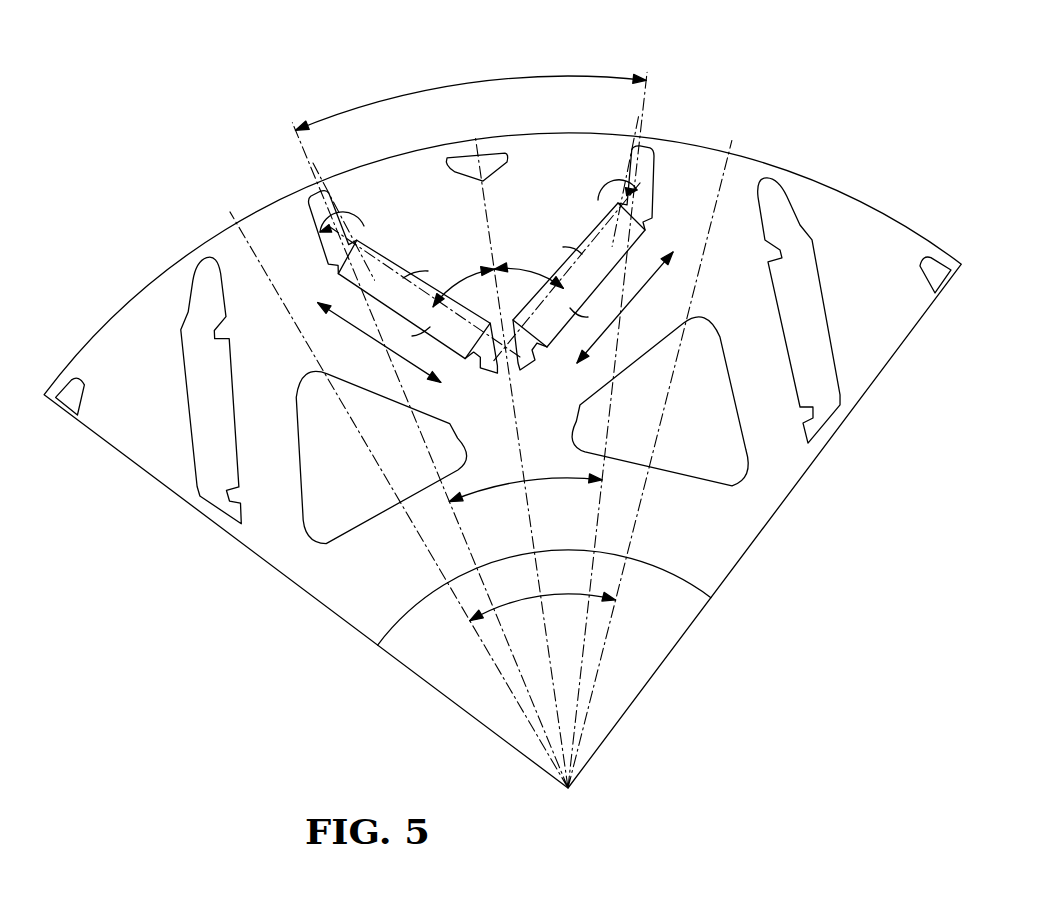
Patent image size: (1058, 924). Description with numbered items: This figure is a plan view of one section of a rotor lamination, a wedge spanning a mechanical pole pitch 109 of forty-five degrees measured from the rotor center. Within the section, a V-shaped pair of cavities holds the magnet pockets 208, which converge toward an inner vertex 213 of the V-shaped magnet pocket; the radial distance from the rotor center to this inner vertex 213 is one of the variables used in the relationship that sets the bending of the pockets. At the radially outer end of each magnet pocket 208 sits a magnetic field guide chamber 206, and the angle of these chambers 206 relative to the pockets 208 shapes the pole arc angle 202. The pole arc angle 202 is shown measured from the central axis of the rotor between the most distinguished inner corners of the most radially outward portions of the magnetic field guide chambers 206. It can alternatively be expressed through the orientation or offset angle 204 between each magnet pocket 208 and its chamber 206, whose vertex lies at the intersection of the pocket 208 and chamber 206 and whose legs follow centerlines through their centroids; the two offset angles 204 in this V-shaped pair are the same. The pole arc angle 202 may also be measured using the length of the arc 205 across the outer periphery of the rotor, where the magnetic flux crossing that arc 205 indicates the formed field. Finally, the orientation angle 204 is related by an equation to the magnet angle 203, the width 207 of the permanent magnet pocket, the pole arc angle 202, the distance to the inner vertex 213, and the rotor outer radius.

The mechanical pole pitch 109 is at (577, 600).
The pole arc angle 202 is at (500, 478).
The magnet angle 203 is at (490, 268).
The orientation angle 204 is at (364, 226).
The arc 205 is at (433, 90).
The magnetic field guide chamber 206 is at (316, 256).
The width of the permanent magnet pocket 207 is at (388, 372).
The magnet pocket 208 is at (370, 263).
The inner vertex of the V-shaped magnet pocket 213 is at (505, 365).